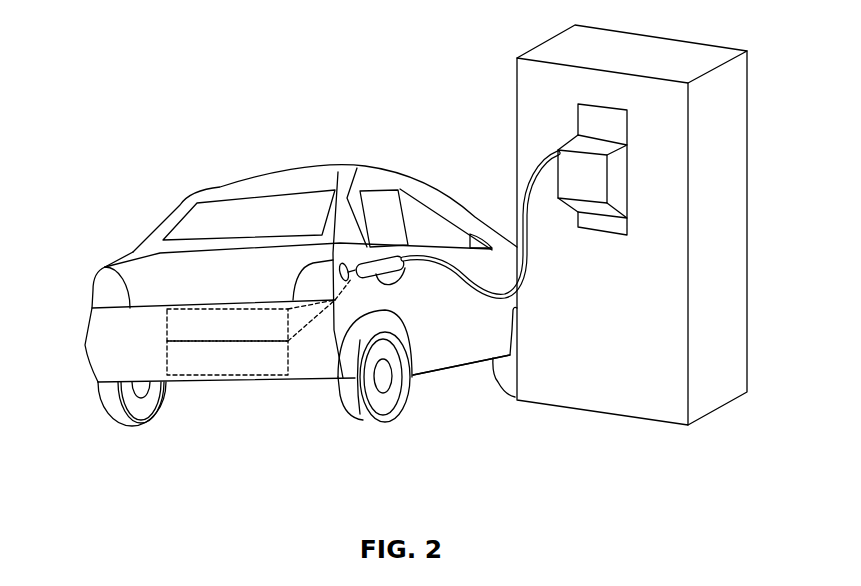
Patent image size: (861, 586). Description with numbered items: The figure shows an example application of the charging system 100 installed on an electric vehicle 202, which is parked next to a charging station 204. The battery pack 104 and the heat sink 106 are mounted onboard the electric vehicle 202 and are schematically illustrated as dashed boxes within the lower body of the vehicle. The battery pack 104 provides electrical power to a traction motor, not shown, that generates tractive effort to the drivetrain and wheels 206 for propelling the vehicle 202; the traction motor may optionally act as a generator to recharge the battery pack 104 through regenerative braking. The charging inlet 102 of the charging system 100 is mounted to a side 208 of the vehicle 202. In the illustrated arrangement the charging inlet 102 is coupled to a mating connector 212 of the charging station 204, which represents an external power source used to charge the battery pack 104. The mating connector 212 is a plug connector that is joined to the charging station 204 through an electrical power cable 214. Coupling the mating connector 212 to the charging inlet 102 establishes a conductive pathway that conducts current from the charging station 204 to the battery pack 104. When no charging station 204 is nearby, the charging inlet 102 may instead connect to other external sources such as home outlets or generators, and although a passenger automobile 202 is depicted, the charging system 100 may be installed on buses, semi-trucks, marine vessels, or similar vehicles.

The charging system 100 is at (348, 305).
The charging inlet 102 is at (355, 263).
The battery pack 104 is at (211, 335).
The heat sink 106 is at (211, 370).
The electric vehicle 202 is at (277, 175).
The charging station 204 is at (737, 131).
The wheels 206 is at (115, 405).
The side of the vehicle 208 is at (450, 330).
The mating connector 212 is at (384, 260).
The electrical power cable 214 is at (451, 268).